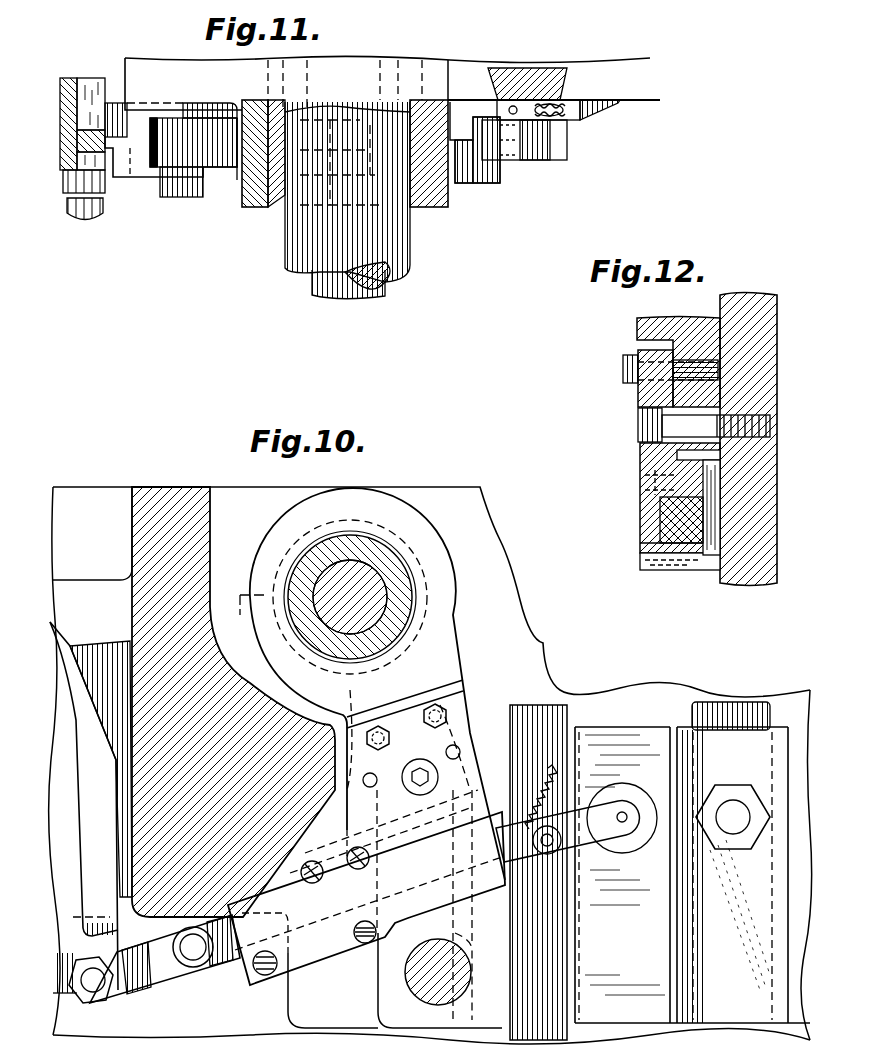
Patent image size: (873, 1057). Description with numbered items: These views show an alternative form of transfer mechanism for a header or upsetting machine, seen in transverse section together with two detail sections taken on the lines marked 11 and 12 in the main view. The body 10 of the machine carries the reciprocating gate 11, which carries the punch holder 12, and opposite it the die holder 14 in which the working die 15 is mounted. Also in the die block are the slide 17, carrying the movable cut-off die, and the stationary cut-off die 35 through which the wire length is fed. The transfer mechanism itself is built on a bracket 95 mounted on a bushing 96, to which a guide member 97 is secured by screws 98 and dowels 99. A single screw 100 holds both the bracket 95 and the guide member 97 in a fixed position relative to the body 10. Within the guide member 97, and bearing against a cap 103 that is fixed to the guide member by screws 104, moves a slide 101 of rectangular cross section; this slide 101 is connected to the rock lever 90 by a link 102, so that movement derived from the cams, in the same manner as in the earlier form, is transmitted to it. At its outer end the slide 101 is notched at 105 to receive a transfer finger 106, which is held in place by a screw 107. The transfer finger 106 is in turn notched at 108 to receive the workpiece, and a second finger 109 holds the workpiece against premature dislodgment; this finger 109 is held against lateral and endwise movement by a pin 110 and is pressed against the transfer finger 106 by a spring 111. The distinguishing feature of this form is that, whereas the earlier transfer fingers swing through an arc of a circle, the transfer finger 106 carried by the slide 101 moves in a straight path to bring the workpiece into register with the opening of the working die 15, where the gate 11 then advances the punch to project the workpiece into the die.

In FIG. 11, the body 10 is at (157, 58).
In FIG. 12, the body 10 is at (748, 583).
In FIG. 10, the body 10 is at (183, 487).
In FIG. 10, the reciprocating gate 11 is at (538, 565).
In FIG. 10, the punch holder 12 is at (385, 680).
In FIG. 10, the die holder 14 is at (620, 727).
In FIG. 10, the working die 15 is at (650, 790).
In FIG. 11, the slide 17 is at (488, 75).
In FIG. 10, the slide 17 is at (555, 708).
In FIG. 10, the stationary cut-off die 35 is at (568, 880).
In FIG. 11, the rock lever 90 is at (70, 78).
In FIG. 10, the rock lever 90 is at (110, 843).
In FIG. 11, the bracket 95 is at (255, 205).
In FIG. 12, the bracket 95 is at (637, 326).
In FIG. 10, the bracket 95 is at (445, 552).
In FIG. 11, the bushing 96 is at (412, 195).
In FIG. 10, the bushing 96 is at (405, 545).
In FIG. 11, the guide member 97 is at (236, 180).
In FIG. 12, the guide member 97 is at (637, 392).
In FIG. 10, the guide member 97 is at (462, 700).
In FIG. 12, the screws 98 is at (623, 360).
In FIG. 10, the screws 98 is at (424, 713).
In FIG. 10, the dowels 99 is at (458, 745).
In FIG. 12, the screw 100 is at (638, 418).
In FIG. 10, the screw 100 is at (420, 768).
In FIG. 11, the slide 101 is at (210, 195).
In FIG. 12, the slide 101 is at (678, 530).
In FIG. 10, the slide 101 is at (222, 963).
In FIG. 11, the link 102 is at (142, 175).
In FIG. 10, the link 102 is at (158, 980).
In FIG. 12, the cap 103 is at (710, 570).
In FIG. 10, the cap 103 is at (430, 908).
In FIG. 12, the screws 104 is at (645, 478).
In FIG. 10, the screws 104 is at (357, 869).
In FIG. 11, the notch 105 is at (505, 150).
In FIG. 10, the notch 105 is at (570, 890).
In FIG. 11, the transfer finger 106 is at (610, 108).
In FIG. 10, the transfer finger 106 is at (605, 855).
In FIG. 11, the screw 107 is at (545, 162).
In FIG. 10, the screw 107 is at (595, 870).
In FIG. 10, the notch 108 is at (627, 823).
In FIG. 11, the finger 109 is at (575, 120).
In FIG. 10, the finger 109 is at (590, 805).
In FIG. 11, the pin 110 is at (515, 100).
In FIG. 10, the pin 110 is at (540, 832).
In FIG. 11, the spring 111 is at (560, 104).
In FIG. 10, the spring 111 is at (560, 780).